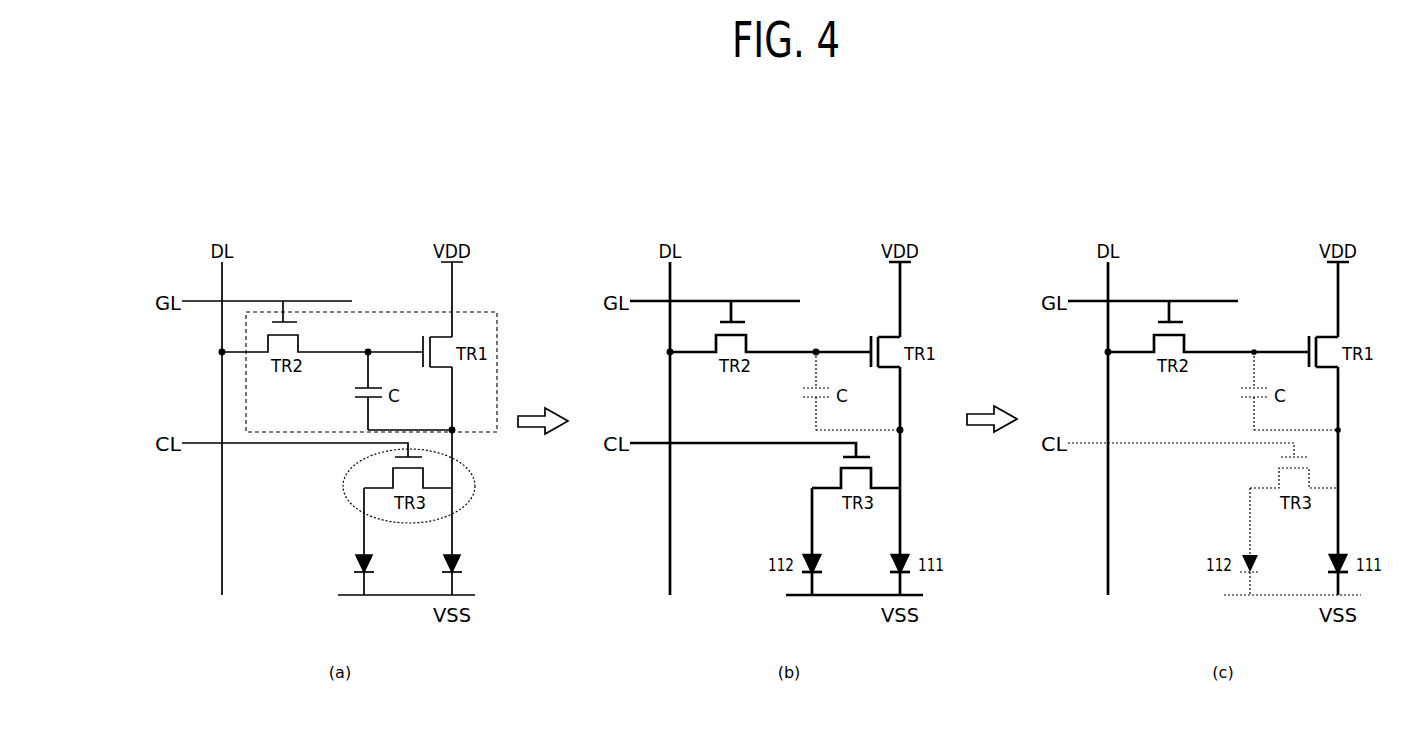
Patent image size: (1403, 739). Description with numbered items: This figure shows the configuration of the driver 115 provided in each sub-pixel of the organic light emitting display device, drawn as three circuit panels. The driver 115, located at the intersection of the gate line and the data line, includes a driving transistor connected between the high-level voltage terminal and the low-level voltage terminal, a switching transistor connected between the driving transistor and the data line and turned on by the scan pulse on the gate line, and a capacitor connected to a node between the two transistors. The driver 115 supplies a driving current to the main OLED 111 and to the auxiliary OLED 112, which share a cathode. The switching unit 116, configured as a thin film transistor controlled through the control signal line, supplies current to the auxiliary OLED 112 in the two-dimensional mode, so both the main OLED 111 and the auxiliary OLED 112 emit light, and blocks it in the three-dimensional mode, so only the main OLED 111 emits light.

The main OLED 111 is at (469, 565).
The auxiliary OLED 112 is at (347, 565).
The driver 115 is at (497, 318).
The switching unit 116 is at (470, 497).